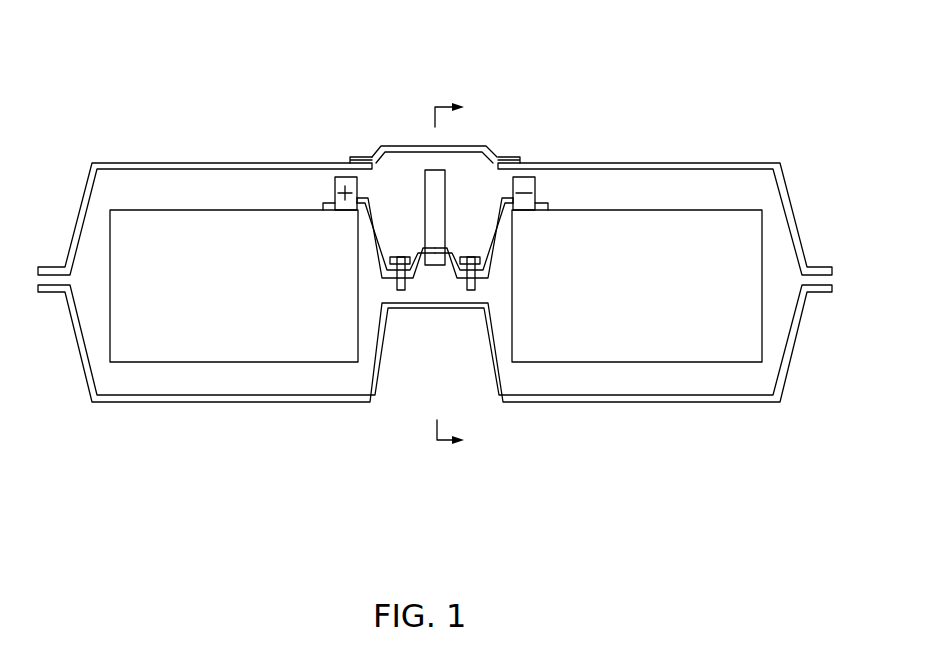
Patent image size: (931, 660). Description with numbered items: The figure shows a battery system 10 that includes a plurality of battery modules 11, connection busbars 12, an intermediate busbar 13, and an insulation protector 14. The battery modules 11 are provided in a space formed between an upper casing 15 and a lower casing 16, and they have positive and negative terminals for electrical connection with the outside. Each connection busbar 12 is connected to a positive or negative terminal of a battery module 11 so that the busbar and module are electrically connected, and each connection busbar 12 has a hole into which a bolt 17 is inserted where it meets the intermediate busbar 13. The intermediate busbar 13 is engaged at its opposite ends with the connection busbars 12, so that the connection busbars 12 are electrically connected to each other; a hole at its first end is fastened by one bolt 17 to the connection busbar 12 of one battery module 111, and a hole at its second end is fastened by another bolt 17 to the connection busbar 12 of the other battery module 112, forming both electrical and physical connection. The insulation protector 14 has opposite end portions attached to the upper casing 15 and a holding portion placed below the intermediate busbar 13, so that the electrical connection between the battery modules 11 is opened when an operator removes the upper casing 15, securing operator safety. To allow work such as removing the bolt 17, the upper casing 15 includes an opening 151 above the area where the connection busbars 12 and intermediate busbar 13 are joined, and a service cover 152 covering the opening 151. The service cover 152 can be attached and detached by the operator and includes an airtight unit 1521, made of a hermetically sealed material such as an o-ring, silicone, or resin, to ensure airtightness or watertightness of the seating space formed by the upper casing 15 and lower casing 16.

The battery system 10 is at (823, 38).
The battery modules 11 is at (183, 377).
The battery module 111 is at (283, 328).
The battery module 112 is at (618, 328).
The connection busbar 12 is at (377, 243).
The intermediate busbar 13 is at (470, 252).
The insulation protector 14 is at (437, 202).
The upper casing 15 is at (163, 163).
The opening 151 is at (413, 157).
The service cover 152 is at (485, 147).
The airtight unit 1521 is at (358, 157).
The lower casing 16 is at (673, 402).
The bolt 17 is at (401, 290).